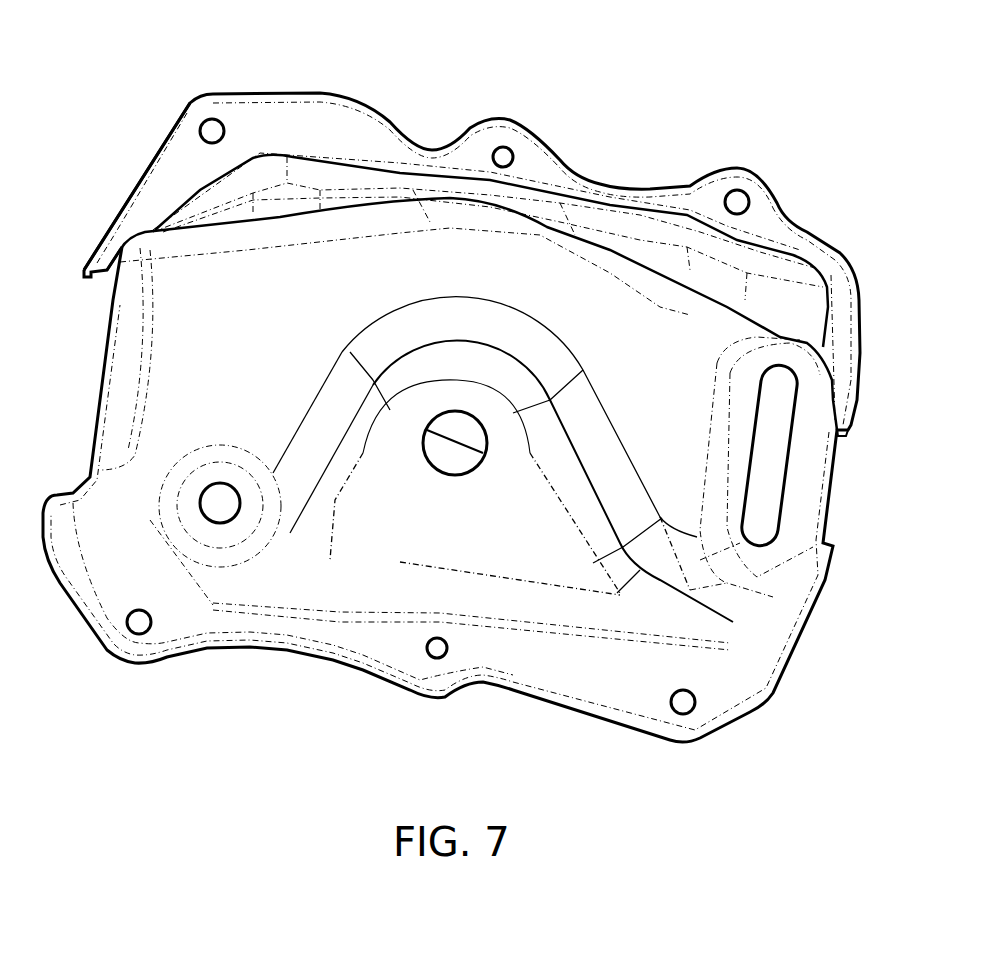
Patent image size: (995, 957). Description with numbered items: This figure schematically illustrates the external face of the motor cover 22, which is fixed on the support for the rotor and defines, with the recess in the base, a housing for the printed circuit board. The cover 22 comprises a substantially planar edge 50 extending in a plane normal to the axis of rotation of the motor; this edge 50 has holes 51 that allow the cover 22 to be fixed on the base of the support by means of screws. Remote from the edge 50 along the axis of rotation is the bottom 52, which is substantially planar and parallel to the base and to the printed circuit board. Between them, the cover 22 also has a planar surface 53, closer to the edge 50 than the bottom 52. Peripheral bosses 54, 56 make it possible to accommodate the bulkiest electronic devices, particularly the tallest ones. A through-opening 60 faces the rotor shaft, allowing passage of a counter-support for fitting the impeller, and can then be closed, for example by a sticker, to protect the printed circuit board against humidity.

The cover 22 is at (134, 150).
The edge 50 is at (773, 235).
The holes 51 is at (206, 124).
The bottom 52 is at (610, 330).
The planar surface 53 is at (483, 558).
The peripheral boss 54 is at (770, 437).
The peripheral boss 56 is at (190, 490).
The through-opening 60 is at (442, 468).